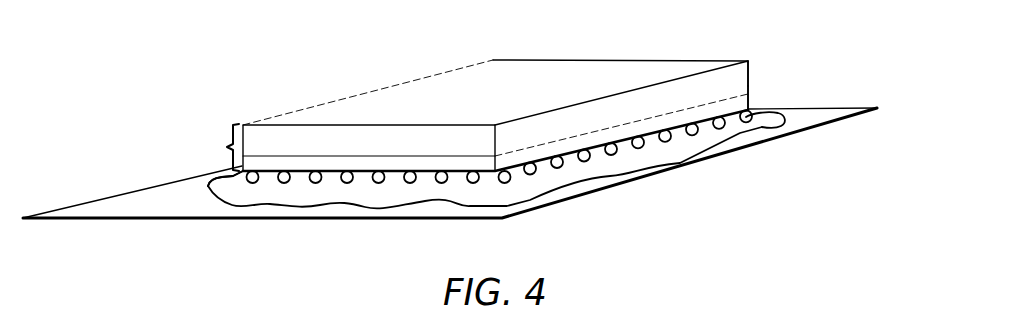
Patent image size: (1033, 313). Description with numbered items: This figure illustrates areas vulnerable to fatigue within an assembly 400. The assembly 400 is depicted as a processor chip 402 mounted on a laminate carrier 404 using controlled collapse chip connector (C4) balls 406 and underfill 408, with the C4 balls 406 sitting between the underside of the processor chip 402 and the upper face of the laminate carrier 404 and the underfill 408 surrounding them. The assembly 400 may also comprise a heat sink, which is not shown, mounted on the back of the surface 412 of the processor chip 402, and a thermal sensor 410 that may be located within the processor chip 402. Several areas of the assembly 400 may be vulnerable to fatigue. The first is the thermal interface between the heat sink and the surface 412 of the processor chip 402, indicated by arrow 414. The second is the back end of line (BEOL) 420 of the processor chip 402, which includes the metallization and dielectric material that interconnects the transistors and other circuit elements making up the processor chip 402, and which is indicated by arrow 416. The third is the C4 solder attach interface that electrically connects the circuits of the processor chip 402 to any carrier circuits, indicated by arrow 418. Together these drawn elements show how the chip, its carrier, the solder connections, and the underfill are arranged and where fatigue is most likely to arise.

The assembly 400 is at (261, 58).
The processor chip 402 is at (212, 147).
The laminate carrier 404 is at (152, 192).
The controlled collapse chip connector (C4) balls 406 is at (337, 183).
The underfill 408 is at (208, 187).
The thermal sensor 410 is at (479, 142).
The surface of processor chip 412 is at (399, 88).
The arrow indicating thermal interface 414 is at (748, 61).
The arrow indicating back end of line 416 is at (508, 168).
The arrow indicating C4 solder attach interface 418 is at (235, 178).
The back end of line (BEOL) 420 is at (749, 104).